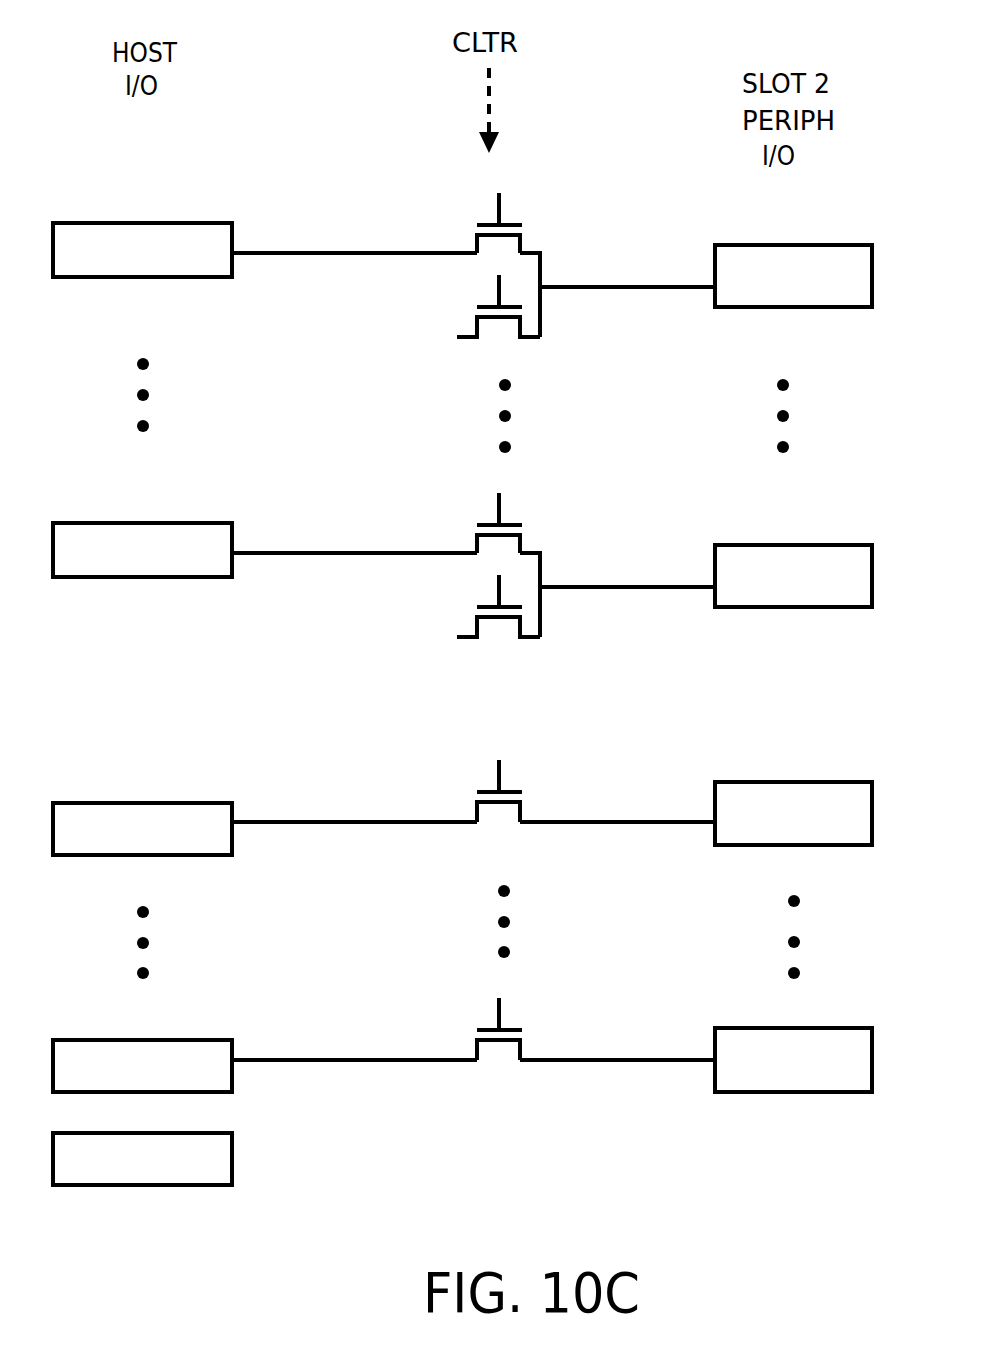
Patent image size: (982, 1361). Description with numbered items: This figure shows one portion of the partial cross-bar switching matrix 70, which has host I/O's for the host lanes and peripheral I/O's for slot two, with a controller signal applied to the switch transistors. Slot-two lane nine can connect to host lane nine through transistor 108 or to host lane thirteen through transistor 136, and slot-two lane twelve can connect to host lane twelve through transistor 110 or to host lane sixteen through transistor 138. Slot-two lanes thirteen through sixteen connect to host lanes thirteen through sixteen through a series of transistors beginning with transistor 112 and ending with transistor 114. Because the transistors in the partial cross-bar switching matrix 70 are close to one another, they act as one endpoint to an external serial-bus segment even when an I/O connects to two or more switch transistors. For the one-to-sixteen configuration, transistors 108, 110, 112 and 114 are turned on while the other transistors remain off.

The partial cross-bar switching matrix 70 is at (355, 1233).
The transistor 108 is at (528, 246).
The transistor 110 is at (528, 546).
The transistor 112 is at (528, 814).
The transistor 114 is at (528, 1052).
The transistor 136 is at (494, 306).
The transistor 138 is at (494, 606).